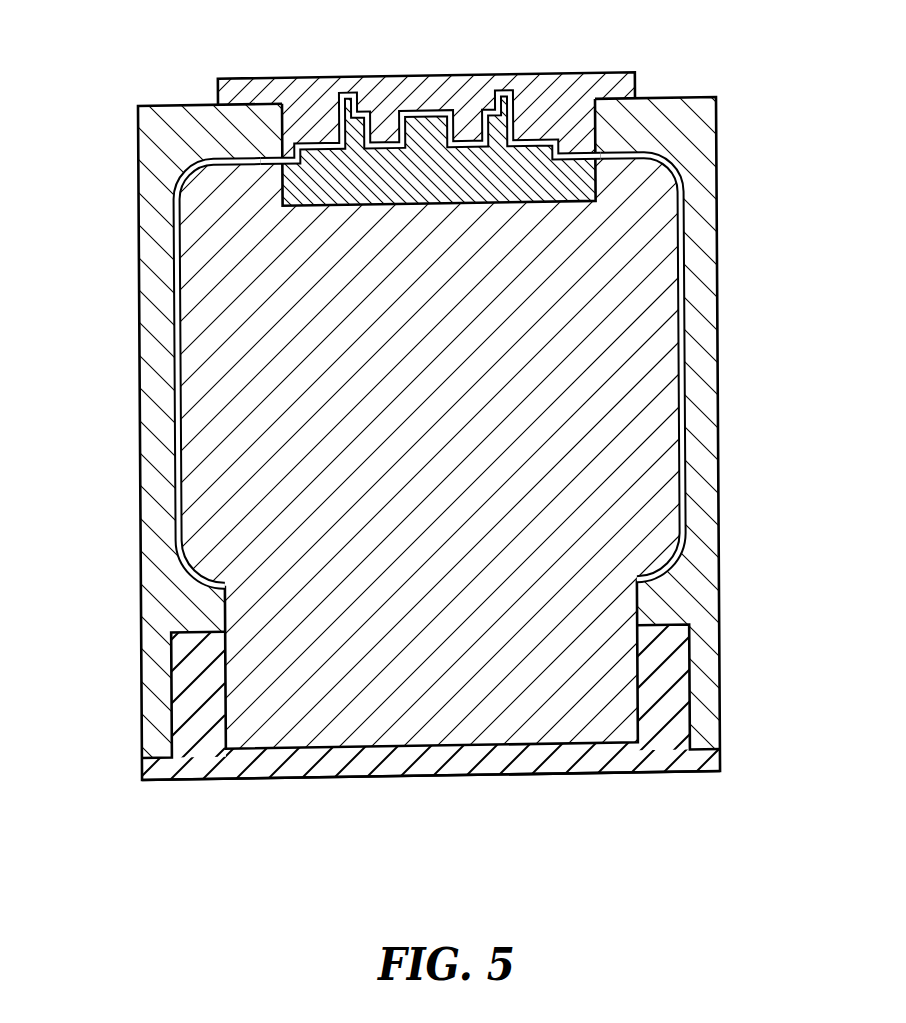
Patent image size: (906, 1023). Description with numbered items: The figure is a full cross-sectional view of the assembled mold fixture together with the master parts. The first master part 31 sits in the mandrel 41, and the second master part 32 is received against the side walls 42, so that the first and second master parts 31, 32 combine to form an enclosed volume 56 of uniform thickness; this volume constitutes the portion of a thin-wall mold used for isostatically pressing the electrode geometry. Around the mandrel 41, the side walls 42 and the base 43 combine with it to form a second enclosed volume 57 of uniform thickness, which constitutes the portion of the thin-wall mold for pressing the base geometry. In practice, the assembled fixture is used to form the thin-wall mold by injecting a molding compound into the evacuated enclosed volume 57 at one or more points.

The first master part 31 is at (305, 78).
The second master part 32 is at (280, 187).
The mandrel 41 is at (477, 657).
The side walls 42 is at (140, 238).
The base 43 is at (188, 780).
The enclosed volume 56 is at (428, 117).
The enclosed volume 57 is at (178, 397).